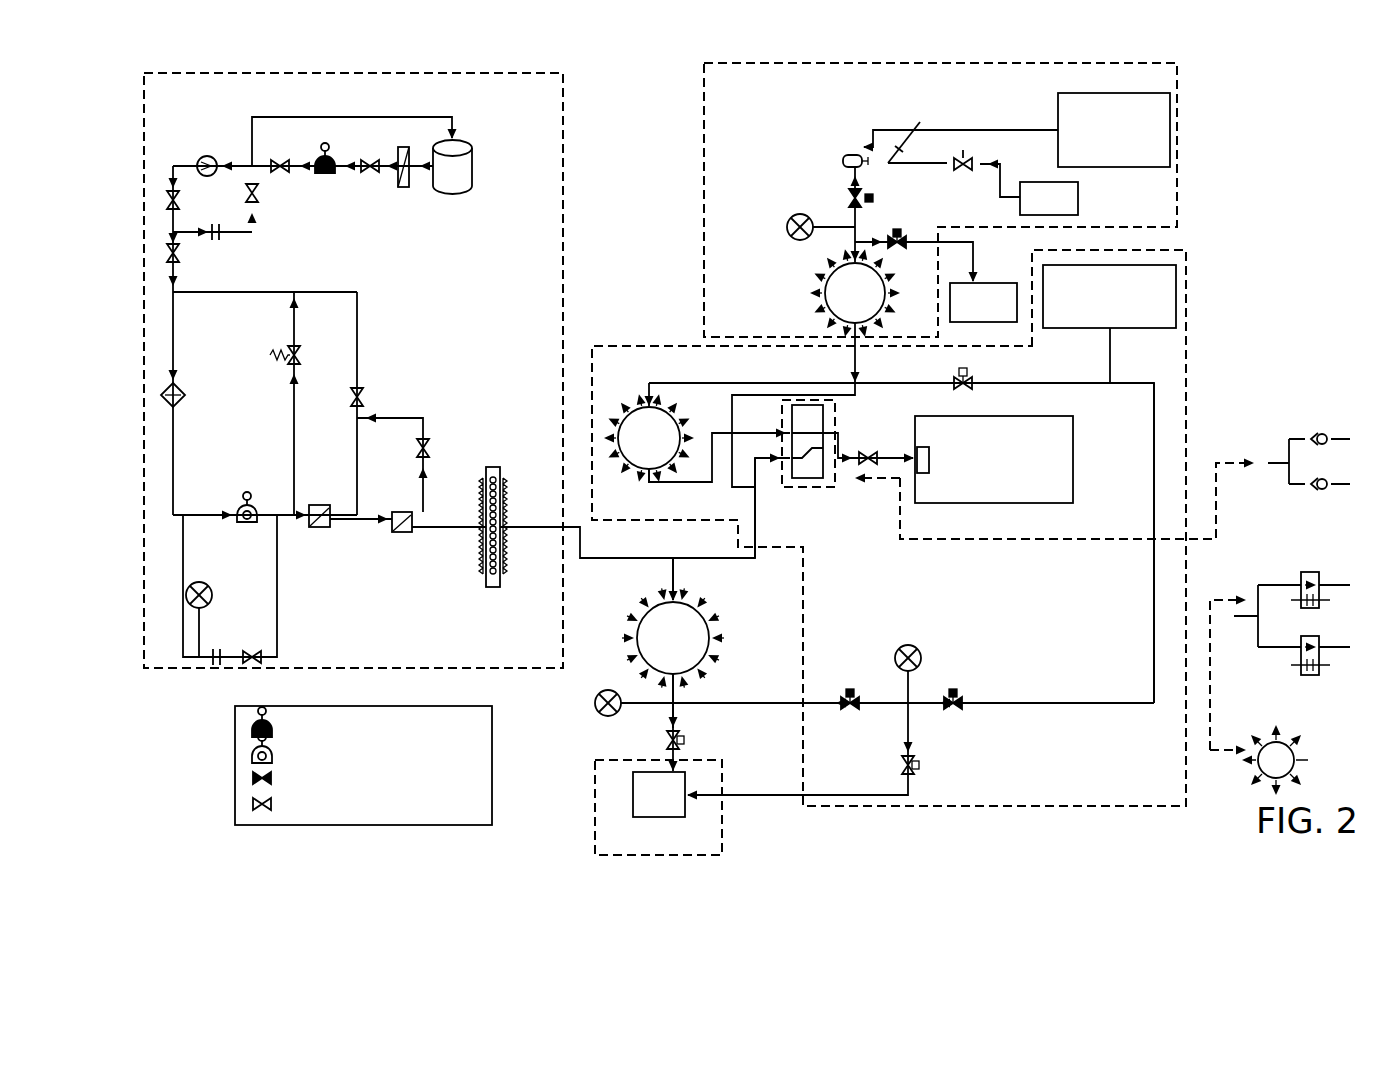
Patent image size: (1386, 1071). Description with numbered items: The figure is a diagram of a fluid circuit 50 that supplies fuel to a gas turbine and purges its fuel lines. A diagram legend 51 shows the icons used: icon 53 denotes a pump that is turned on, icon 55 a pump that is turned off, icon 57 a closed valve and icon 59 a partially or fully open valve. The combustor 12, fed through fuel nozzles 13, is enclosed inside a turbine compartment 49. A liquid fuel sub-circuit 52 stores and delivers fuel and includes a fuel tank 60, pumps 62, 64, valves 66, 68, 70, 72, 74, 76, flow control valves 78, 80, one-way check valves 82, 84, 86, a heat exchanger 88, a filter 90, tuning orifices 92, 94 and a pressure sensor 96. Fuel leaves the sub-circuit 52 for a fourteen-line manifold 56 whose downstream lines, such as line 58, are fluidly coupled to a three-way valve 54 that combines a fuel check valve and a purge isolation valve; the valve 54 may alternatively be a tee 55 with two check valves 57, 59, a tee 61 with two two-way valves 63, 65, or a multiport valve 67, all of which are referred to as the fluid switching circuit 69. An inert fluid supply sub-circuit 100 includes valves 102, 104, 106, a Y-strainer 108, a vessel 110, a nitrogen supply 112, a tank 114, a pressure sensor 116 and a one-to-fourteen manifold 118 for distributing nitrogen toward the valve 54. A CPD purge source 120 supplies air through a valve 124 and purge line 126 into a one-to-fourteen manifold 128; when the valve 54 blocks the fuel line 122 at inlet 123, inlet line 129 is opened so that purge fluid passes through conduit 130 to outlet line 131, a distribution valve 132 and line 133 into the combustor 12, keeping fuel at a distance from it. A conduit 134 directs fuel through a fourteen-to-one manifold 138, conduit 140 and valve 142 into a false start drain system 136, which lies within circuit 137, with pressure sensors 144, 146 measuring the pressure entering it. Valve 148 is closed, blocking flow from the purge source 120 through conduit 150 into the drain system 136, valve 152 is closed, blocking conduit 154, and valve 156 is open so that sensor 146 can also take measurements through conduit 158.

The combustor 12 is at (1005, 500).
The fuel nozzles 13 is at (925, 452).
The turbine compartment 49 is at (1187, 322).
The fluid circuit 50 is at (641, 126).
The diagram legend 51 is at (364, 706).
The liquid fuel sub-circuit 52 is at (470, 73).
The icon 53 is at (388, 729).
The three-way valve 54 is at (808, 479).
The tee 55 is at (386, 755).
The 14-line manifold 56 is at (502, 470).
The check valve 57 is at (431, 780).
The line 58 is at (664, 558).
The check valve 59 is at (411, 806).
The fuel tank 60 is at (452, 198).
The tee 61 is at (1246, 586).
The pump 62 is at (328, 148).
The two-way valve 63 is at (1338, 612).
The pump 64 is at (247, 492).
The two-way valve 65 is at (1338, 672).
The valve 66 is at (366, 173).
The multiport valve 67 is at (1303, 745).
The valve 68 is at (276, 173).
The fluid switching circuit 69 is at (836, 472).
The valve 70 is at (258, 200).
The valve 72 is at (166, 196).
The valve 74 is at (180, 252).
The valve 76 is at (298, 352).
The flow control valve 78 is at (318, 504).
The flow control valve 80 is at (402, 511).
The one-way valve 82 is at (366, 396).
The one-way valve 84 is at (432, 448).
The one-way valve 86 is at (258, 650).
The heat exchanger 88 is at (210, 160).
The filter 90 is at (186, 392).
The tuning orifice 92 is at (222, 242).
The tuning orifice 94 is at (219, 648).
The pressure sensor 96 is at (214, 595).
The inert fluid supply sub-circuit 100 is at (1165, 228).
The valve 102 is at (874, 196).
The valve 104 is at (900, 230).
The valve 106 is at (950, 172).
The Y-strainer 108 is at (921, 121).
The vessel 110 is at (843, 165).
The inert fluid supply 112 is at (1113, 93).
The fuel tank 114 is at (1079, 197).
The pressure sensor 116 is at (791, 216).
The manifold 118 is at (890, 297).
The CPD purge source 120 is at (1177, 290).
The fuel line 122 is at (760, 532).
The inlet 123 is at (788, 470).
The valve 124 is at (969, 374).
The purge line 126 is at (677, 381).
The manifold 128 is at (686, 414).
The inlet line 129 is at (790, 434).
The conduit 130 is at (680, 484).
The outlet line 131 is at (828, 422).
The distribution valve 132 is at (870, 452).
The fluid line 133 is at (895, 461).
The conduit 134 is at (677, 572).
The false start drain system 136 is at (990, 283).
The circuit 137 is at (594, 806).
The manifold 138 is at (724, 616).
The conduit 140 is at (676, 711).
The valve 142 is at (685, 744).
The pressure sensor 144 is at (596, 712).
The pressure sensor 146 is at (922, 658).
The valve 148 is at (957, 690).
The conduit 150 is at (1153, 573).
The valve 152 is at (850, 688).
The conduit 154 is at (762, 702).
The valve 156 is at (916, 770).
The conduit 158 is at (796, 796).